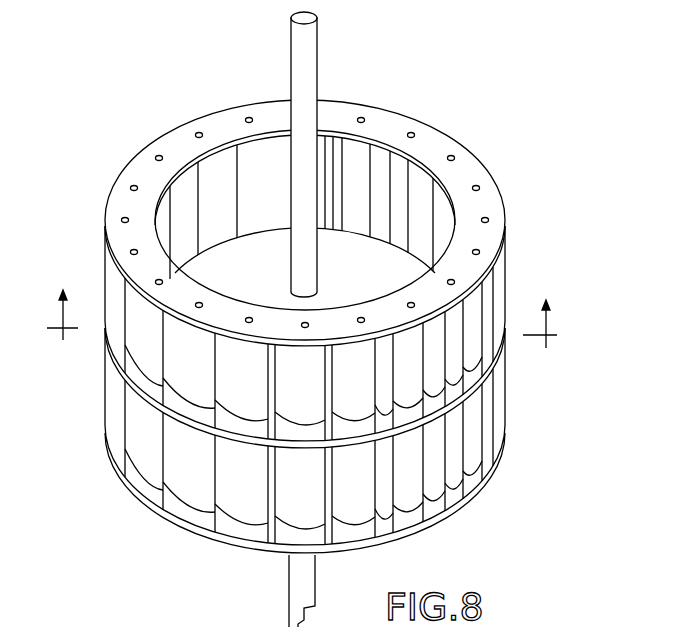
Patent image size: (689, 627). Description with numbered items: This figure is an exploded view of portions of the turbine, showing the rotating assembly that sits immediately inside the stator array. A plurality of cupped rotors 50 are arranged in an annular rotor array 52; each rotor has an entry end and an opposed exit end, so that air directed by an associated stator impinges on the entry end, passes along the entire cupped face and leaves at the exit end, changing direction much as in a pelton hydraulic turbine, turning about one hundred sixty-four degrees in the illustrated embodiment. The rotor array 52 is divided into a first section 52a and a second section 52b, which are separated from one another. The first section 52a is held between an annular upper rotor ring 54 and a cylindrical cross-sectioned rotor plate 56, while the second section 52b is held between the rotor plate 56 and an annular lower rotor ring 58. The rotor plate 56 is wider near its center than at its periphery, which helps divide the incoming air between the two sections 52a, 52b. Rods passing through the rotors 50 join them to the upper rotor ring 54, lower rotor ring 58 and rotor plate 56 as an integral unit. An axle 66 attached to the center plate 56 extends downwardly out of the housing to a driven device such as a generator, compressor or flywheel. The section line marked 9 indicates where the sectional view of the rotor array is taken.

The cupped rotor 50 is at (410, 335).
The annular rotor array 52 is at (324, 308).
The first section 52a is at (520, 262).
The second section 52b is at (520, 414).
The annular upper rotor ring 54 is at (378, 120).
The rotor plate 56 is at (125, 398).
The annular lower rotor ring 58 is at (162, 526).
The axle 66 is at (290, 42).
The section line 9- 9 is at (302, 319).